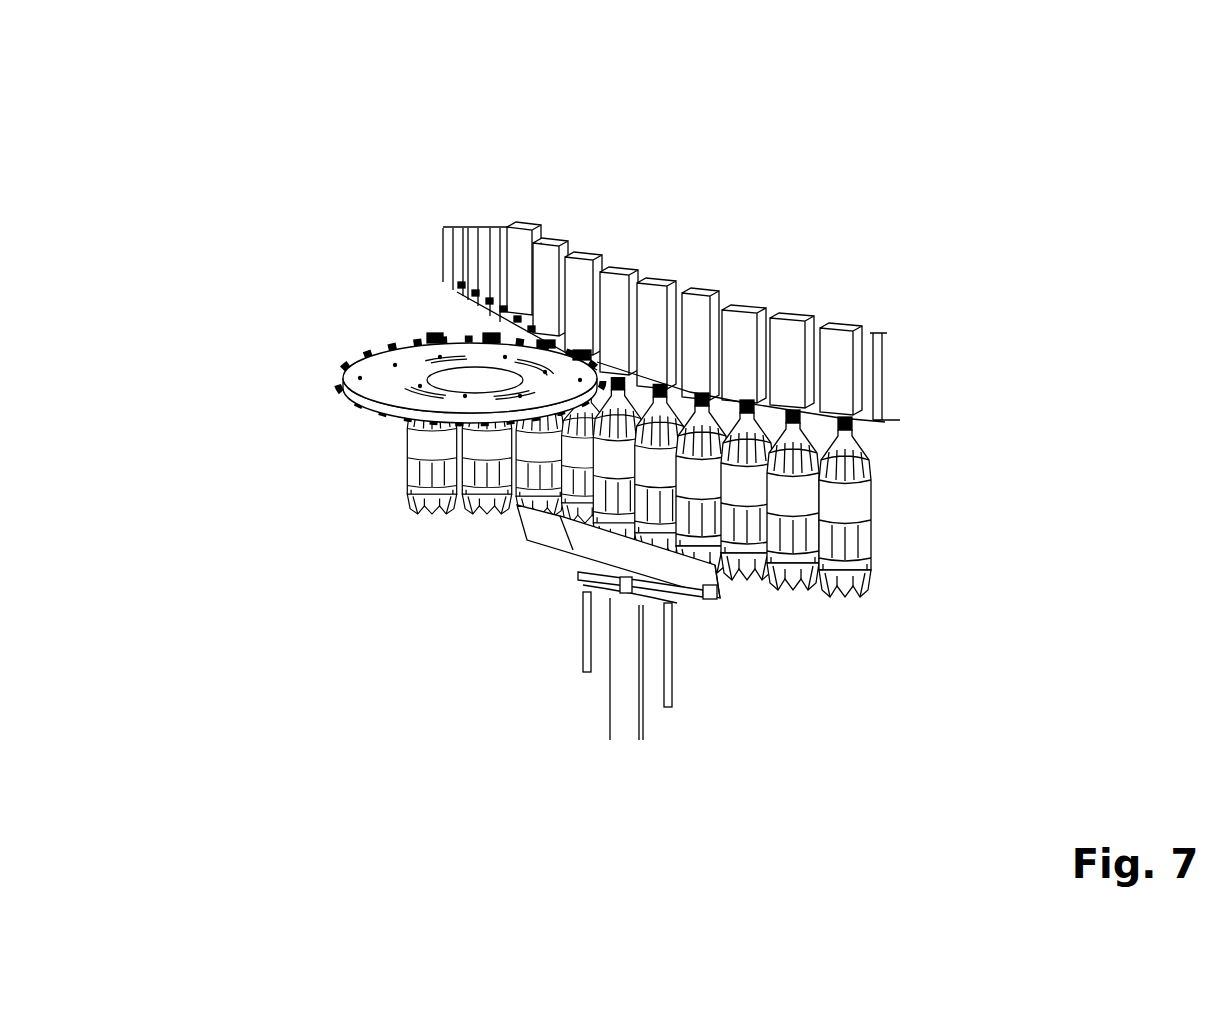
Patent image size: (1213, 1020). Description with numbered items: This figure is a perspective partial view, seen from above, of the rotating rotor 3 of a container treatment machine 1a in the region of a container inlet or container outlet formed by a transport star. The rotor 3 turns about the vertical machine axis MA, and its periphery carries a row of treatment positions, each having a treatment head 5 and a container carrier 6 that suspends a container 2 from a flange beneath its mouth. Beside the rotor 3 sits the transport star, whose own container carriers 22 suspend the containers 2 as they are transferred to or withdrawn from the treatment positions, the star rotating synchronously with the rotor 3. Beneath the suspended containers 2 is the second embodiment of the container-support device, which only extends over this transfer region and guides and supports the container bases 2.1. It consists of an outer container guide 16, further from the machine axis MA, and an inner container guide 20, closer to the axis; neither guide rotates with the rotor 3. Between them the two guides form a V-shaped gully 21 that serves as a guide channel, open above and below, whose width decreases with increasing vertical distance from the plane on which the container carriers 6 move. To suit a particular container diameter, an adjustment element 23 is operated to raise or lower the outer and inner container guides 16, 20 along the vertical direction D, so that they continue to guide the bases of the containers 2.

The container treatment machine 1a is at (922, 282).
The container 2 is at (870, 518).
The container base 2.1 is at (863, 590).
The rotor 3 is at (885, 422).
The treatment head 5 is at (711, 295).
The container carrier 6 is at (466, 292).
The outer container guide 16 is at (558, 530).
The inner container guide 20 is at (714, 580).
The V-shaped gully 21 is at (721, 590).
The container carrier 22 is at (338, 378).
The adjustment element 23 is at (615, 668).
The vertical direction D is at (557, 618).
The machine axis MA is at (907, 163).